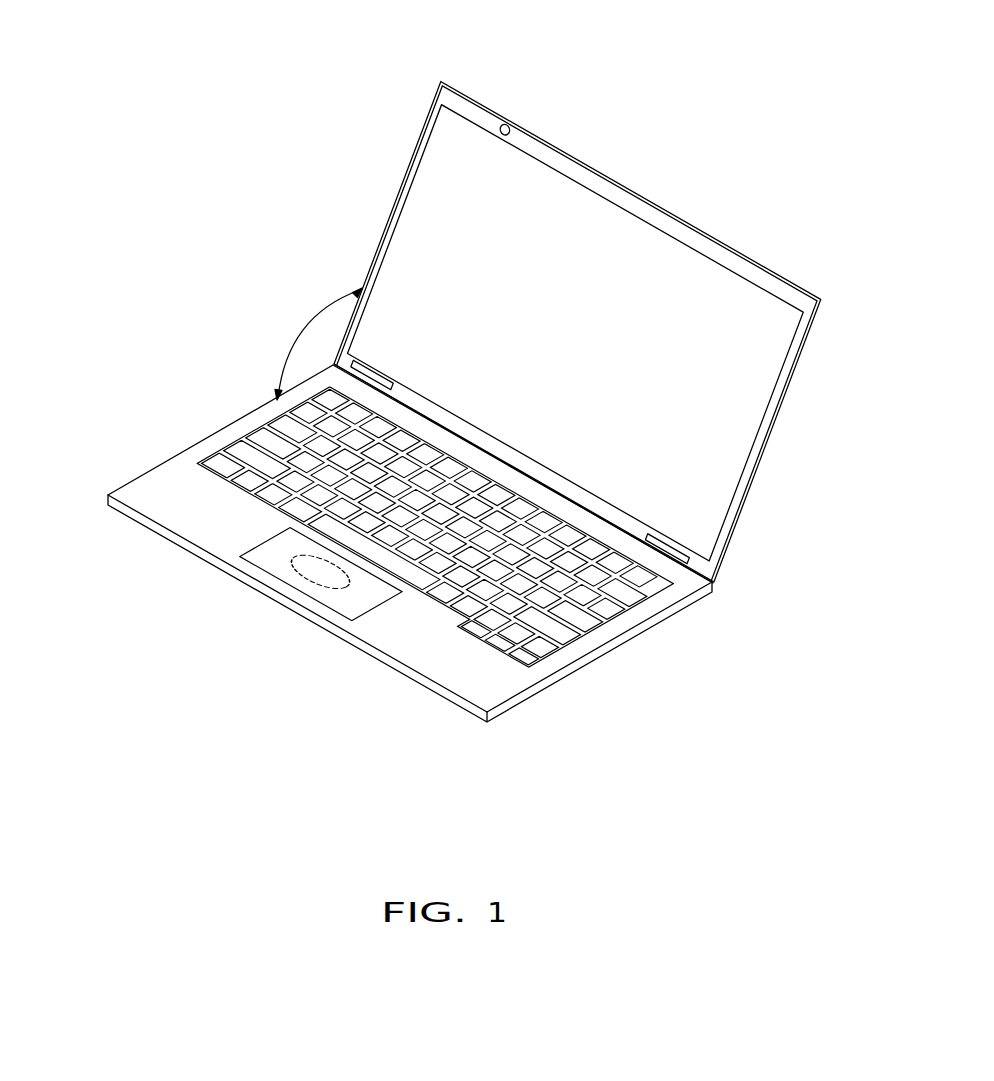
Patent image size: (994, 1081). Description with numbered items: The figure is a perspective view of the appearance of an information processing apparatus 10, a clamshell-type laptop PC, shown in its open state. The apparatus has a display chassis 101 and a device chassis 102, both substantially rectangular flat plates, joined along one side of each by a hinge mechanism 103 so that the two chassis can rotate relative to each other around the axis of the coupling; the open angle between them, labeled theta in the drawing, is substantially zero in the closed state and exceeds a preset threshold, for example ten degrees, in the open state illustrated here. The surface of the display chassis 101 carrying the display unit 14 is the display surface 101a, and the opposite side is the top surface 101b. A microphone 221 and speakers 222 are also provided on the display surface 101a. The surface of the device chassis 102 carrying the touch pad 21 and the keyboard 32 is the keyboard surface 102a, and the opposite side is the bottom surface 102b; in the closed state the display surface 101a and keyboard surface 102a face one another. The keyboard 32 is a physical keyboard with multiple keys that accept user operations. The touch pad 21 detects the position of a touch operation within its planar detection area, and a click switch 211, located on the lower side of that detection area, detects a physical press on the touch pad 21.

The information processing apparatus 10 is at (713, 170).
The display chassis 101 is at (732, 241).
The display surface 101a is at (462, 139).
The top surface 101b is at (498, 102).
The device chassis 102 is at (640, 634).
The keyboard surface 102a is at (164, 488).
The bottom surface 102b is at (166, 553).
The hinge mechanism 103 is at (716, 586).
The display unit 14 is at (438, 225).
The touch pad 21 is at (365, 614).
The click switch 211 is at (325, 590).
The microphone 221 is at (512, 130).
The speakers 222 is at (368, 366).
The keyboard 32 is at (512, 578).